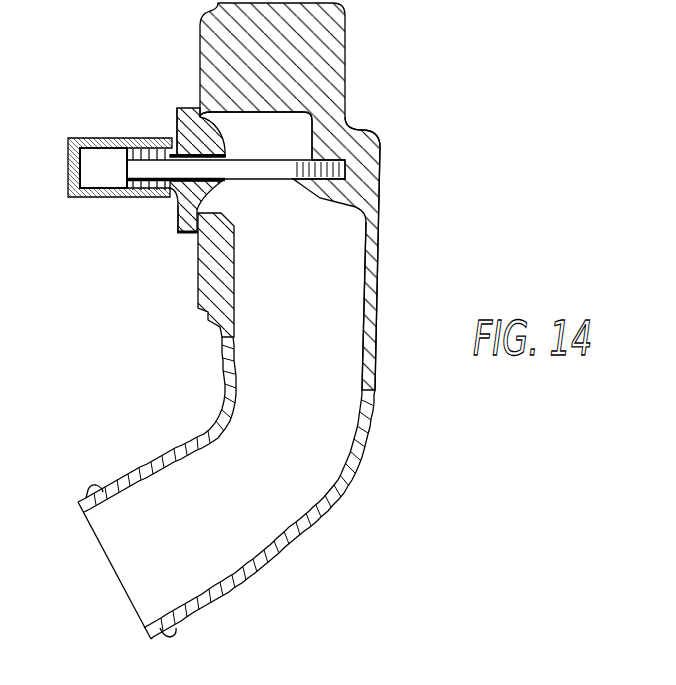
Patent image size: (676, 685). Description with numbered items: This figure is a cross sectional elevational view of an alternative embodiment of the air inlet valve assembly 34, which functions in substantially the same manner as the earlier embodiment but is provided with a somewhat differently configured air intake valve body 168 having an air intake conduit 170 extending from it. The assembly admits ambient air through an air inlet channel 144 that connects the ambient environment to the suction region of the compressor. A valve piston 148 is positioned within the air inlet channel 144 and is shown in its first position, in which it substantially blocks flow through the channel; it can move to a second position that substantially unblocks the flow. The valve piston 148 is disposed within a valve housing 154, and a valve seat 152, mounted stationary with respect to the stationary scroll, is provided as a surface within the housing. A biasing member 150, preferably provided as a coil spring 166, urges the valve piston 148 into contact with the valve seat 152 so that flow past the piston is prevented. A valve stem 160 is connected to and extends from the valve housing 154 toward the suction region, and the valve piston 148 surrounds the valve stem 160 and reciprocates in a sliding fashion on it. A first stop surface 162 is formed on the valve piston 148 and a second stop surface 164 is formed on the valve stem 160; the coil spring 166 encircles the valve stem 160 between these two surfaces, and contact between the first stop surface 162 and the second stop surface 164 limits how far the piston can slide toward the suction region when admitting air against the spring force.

The air inlet valve assembly 34 is at (440, 84).
The air inlet channel 144 is at (161, 116).
The valve piston 148 is at (176, 236).
The biasing member 150 is at (122, 165).
The valve seat 152 is at (186, 106).
The valve housing 154 is at (310, 62).
The valve stem 160 is at (247, 160).
The first stop surface 162 is at (170, 148).
The second stop surface 164 is at (142, 192).
The coil spring 166 is at (203, 186).
The air intake valve body 168 is at (390, 145).
The air intake conduit 170 is at (362, 492).